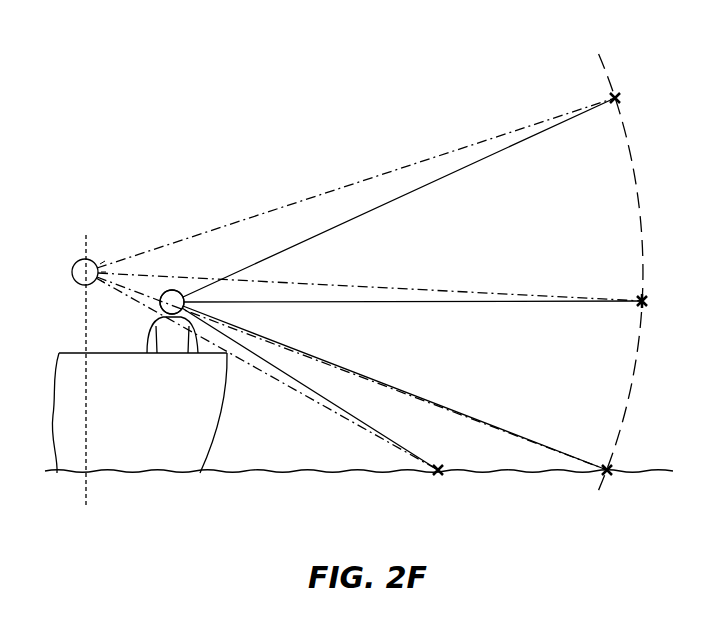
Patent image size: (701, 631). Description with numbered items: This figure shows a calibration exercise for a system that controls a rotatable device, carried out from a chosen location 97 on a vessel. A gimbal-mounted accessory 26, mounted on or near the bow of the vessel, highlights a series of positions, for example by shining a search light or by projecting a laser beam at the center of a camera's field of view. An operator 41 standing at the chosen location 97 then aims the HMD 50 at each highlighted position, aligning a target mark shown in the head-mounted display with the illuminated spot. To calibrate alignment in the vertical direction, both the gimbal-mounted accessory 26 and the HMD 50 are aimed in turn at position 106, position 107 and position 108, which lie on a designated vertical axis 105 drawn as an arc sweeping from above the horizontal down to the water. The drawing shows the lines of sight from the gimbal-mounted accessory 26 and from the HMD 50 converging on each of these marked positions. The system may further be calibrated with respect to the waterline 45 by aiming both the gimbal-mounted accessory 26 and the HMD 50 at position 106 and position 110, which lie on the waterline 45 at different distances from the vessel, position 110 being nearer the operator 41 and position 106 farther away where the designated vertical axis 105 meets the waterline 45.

The gimbal-mounted accessory 26 is at (78, 283).
The operator 41 is at (173, 289).
The HMD 50 is at (185, 292).
The chosen location 97 is at (171, 340).
The waterline 45 is at (271, 476).
The designated vertical axis 105 is at (612, 77).
The position 106 is at (613, 475).
The position 107 is at (647, 299).
The position 108 is at (619, 100).
The position 110 is at (443, 477).